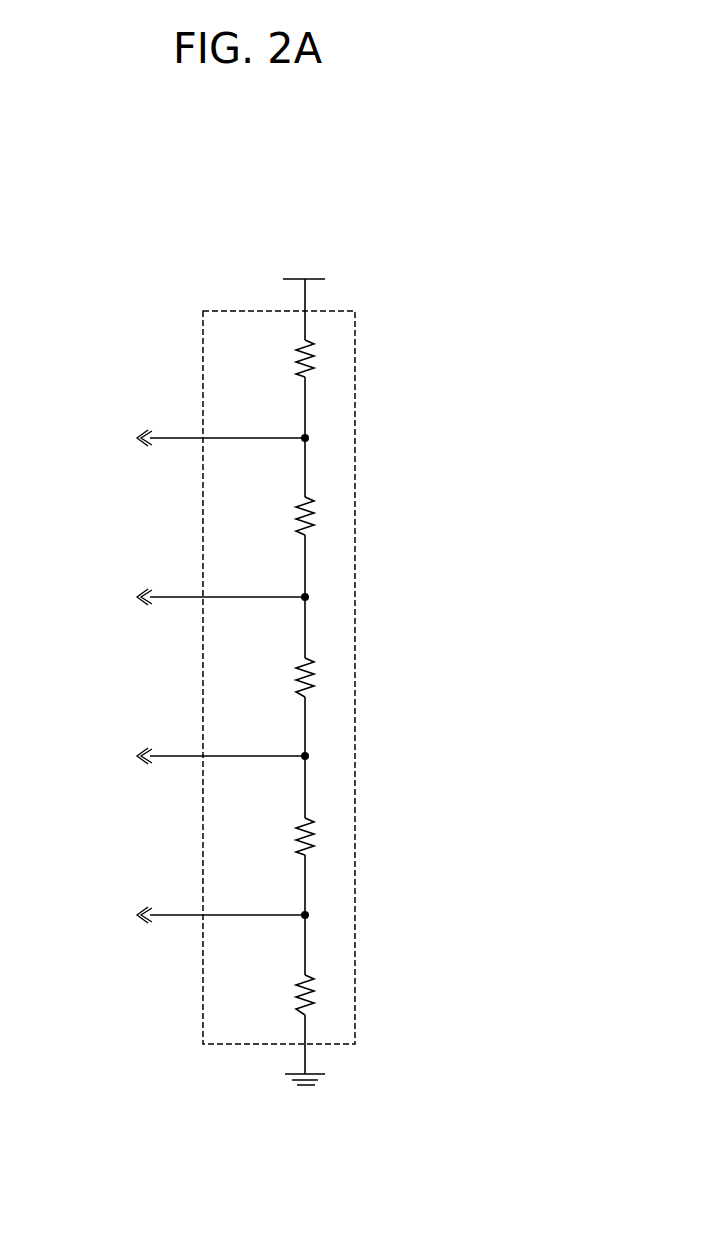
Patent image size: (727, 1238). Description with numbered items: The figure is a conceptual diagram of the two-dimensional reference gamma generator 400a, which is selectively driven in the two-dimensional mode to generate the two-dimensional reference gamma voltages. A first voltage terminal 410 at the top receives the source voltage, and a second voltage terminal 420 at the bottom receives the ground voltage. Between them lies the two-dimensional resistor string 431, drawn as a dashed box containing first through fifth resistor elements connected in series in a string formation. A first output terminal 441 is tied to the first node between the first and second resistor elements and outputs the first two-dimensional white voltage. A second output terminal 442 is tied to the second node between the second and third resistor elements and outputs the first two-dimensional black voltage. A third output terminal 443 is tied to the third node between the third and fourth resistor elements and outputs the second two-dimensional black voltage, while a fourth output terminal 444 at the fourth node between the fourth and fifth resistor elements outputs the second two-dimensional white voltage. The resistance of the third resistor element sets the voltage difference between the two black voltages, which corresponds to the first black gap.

The 2D reference gamma generator 400a is at (244, 233).
The first voltage terminal 410 is at (315, 281).
The second voltage terminal 420 is at (312, 1075).
The 2D resistor string 431 is at (357, 639).
The first output terminal 441 is at (180, 438).
The second output terminal 442 is at (180, 597).
The third output terminal 443 is at (180, 756).
The fourth output terminal 444 is at (180, 915).